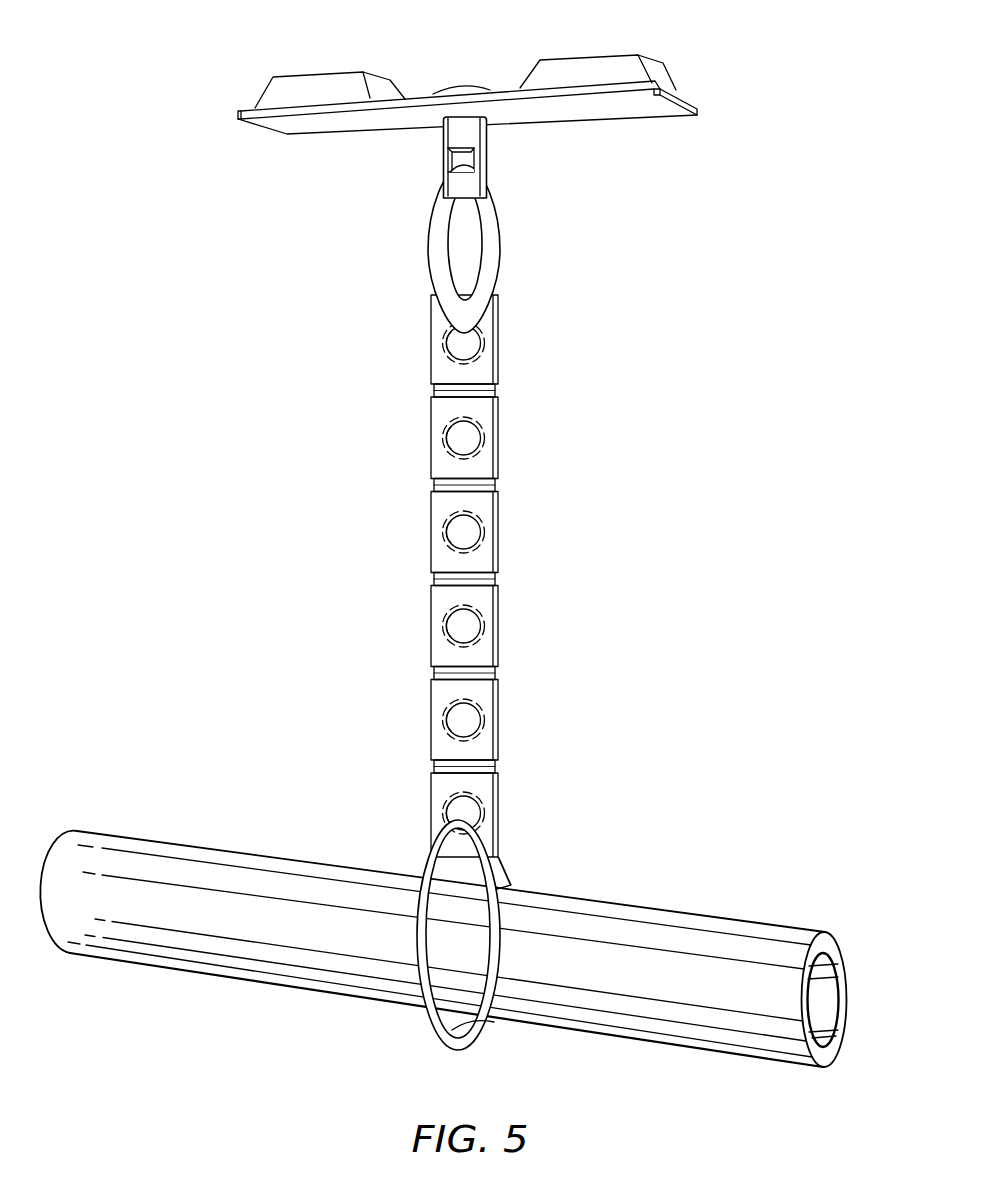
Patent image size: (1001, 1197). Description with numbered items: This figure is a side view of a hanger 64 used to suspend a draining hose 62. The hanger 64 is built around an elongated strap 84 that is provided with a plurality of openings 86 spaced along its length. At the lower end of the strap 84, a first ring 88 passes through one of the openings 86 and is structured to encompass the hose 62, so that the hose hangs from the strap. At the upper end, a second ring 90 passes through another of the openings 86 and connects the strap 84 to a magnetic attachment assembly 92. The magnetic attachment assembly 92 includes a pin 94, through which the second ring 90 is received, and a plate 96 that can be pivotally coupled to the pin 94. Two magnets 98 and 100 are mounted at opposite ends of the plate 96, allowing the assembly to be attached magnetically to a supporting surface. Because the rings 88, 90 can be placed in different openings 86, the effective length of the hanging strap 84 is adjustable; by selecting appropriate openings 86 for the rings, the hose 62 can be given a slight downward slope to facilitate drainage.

The hose 62 is at (655, 908).
The hanger 64 is at (411, 607).
The strap 84 is at (500, 540).
The openings 86 is at (462, 530).
The first ring 88 is at (420, 903).
The second ring 90 is at (500, 250).
The magnetic attachment assembly 92 is at (536, 170).
The pin 94 is at (488, 163).
The plate 96 is at (345, 129).
The magnet 98 is at (323, 83).
The magnet 100 is at (595, 65).